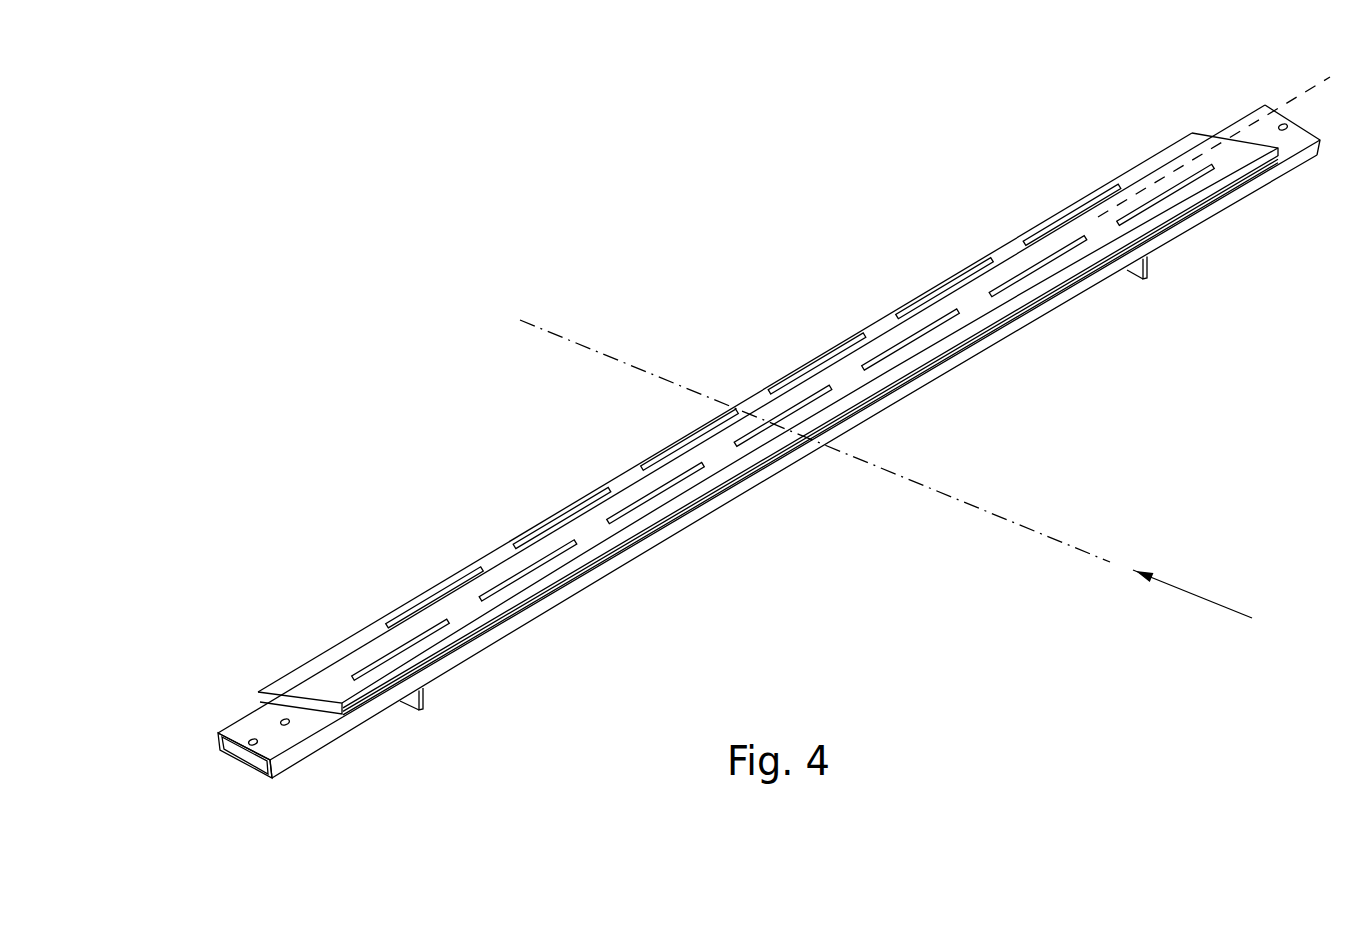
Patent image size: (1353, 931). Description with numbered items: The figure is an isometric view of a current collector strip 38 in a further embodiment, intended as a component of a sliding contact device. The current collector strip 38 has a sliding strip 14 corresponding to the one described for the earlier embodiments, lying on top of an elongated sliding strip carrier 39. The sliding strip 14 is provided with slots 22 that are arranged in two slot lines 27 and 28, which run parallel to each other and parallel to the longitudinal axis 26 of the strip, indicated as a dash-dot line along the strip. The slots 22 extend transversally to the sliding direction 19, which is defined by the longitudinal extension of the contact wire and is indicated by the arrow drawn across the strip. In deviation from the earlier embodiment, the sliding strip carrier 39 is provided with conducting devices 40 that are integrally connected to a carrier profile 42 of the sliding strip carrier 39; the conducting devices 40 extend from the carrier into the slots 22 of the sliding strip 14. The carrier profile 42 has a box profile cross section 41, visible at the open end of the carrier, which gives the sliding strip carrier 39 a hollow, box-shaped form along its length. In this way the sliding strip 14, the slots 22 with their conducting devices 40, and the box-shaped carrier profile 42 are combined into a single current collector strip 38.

The sliding strip 14 is at (943, 283).
The sliding direction 19 is at (1185, 588).
The slots 22 is at (1062, 220).
The longitudinal axis 26 is at (1297, 100).
The slot line 27 is at (1118, 177).
The slot line 28 is at (1217, 213).
The current collector strip 38 is at (763, 283).
The sliding strip carrier 39 is at (370, 728).
The conducting devices 40 is at (913, 338).
The box profile cross section 41 is at (254, 773).
The carrier profile 42 is at (232, 760).